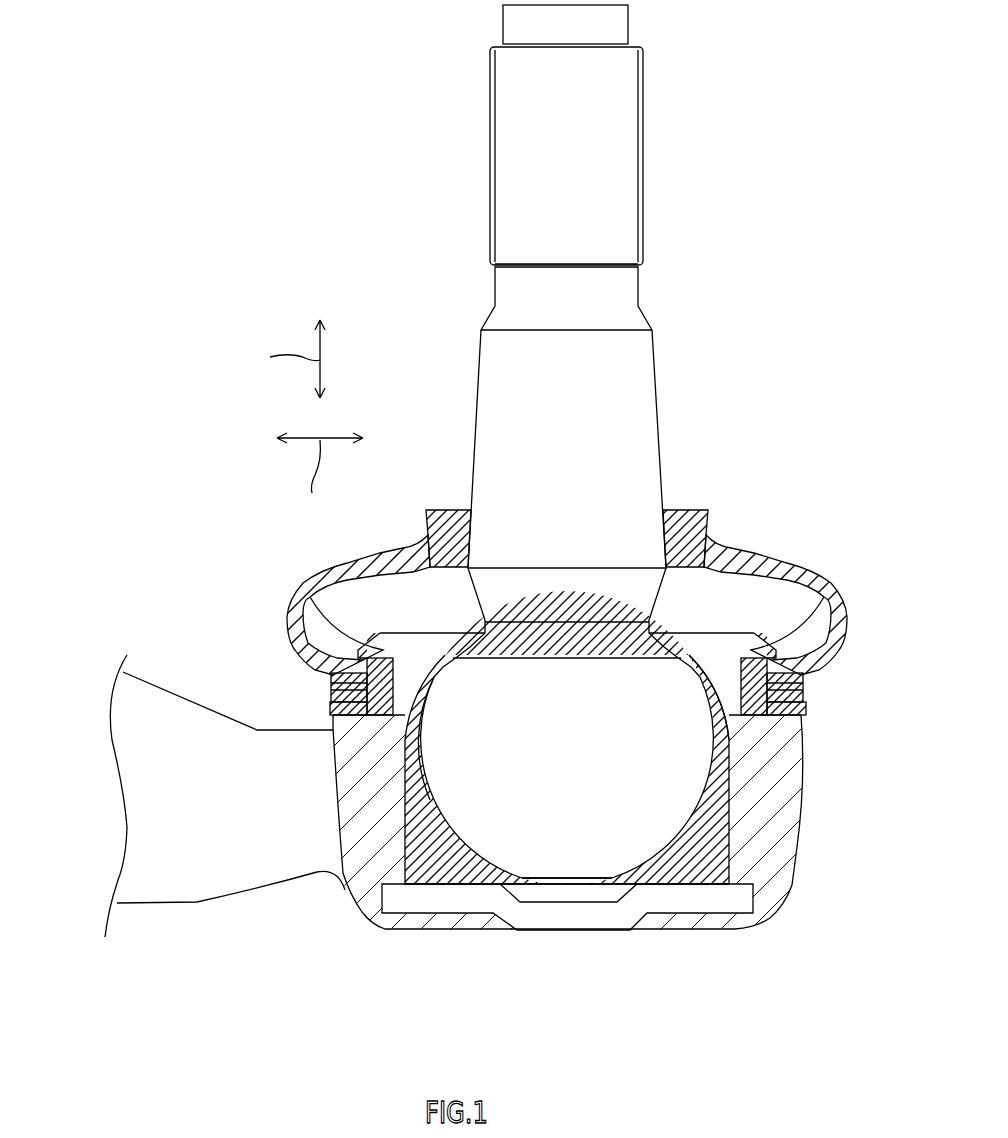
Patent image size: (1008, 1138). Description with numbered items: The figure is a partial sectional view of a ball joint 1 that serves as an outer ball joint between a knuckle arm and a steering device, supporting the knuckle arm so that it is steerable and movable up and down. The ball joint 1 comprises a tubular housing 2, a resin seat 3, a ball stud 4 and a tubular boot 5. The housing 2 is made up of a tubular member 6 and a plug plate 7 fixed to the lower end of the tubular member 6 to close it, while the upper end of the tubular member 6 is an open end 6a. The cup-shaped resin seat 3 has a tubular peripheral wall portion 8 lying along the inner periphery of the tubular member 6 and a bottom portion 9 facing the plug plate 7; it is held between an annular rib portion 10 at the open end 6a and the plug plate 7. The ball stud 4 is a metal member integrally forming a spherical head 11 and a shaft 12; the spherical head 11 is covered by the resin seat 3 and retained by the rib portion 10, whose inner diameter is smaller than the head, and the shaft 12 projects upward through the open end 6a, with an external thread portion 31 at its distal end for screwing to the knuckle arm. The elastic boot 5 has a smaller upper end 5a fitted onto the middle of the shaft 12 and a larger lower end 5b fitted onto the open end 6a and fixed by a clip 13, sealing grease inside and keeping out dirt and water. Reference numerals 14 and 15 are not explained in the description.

The ball joint 1 is at (343, 97).
The housing 2 is at (802, 878).
The resin seat 3 is at (743, 792).
The ball stud 4 is at (664, 384).
The boot 5 is at (768, 548).
The upper end of boot 5a is at (680, 517).
The lower end of boot 5b is at (796, 639).
The tubular member 6 is at (348, 777).
The open end 6a is at (712, 650).
The plug plate 7 is at (567, 920).
The peripheral wall portion 8 is at (412, 806).
The bottom portion 9 is at (443, 873).
The rib portion 10 is at (407, 673).
The spherical head 11 is at (657, 828).
The shaft 12 is at (497, 397).
The clip 13 is at (323, 688).
The clip ring 14 is at (801, 690).
The lip of dust cover 15 is at (297, 594).
The external thread portion 31 is at (643, 125).